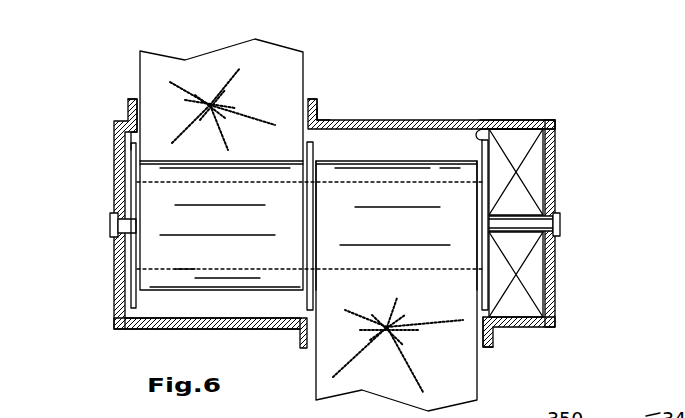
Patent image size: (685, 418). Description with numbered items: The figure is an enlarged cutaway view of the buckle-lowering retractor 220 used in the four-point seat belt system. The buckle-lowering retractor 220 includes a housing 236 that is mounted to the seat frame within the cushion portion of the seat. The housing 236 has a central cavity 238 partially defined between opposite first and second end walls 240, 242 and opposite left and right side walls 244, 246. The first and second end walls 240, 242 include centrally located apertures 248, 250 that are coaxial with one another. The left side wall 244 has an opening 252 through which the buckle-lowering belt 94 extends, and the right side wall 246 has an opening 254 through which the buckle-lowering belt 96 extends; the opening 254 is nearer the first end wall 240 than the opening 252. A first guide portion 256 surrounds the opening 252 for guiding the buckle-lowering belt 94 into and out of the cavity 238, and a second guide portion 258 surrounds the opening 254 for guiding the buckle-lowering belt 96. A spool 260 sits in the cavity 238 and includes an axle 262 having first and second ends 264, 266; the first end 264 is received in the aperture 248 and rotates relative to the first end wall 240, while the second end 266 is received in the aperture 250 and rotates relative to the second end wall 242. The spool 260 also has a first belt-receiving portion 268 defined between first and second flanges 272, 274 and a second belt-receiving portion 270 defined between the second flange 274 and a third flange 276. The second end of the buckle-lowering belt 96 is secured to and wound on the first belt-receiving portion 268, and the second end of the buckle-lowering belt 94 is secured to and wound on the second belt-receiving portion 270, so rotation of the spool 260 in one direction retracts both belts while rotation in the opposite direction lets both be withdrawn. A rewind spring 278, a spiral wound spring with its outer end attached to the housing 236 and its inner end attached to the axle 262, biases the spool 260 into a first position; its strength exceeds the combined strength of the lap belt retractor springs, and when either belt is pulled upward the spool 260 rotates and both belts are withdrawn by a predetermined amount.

The buckle-lowering belt 94 is at (450, 380).
The buckle-lowering belt 96 is at (175, 76).
The buckle-lowering retractor 220 is at (497, 107).
The housing 236 is at (143, 327).
The central cavity 238 is at (407, 153).
The first end wall 240 is at (118, 156).
The second end wall 242 is at (556, 180).
The left side wall 244 is at (253, 330).
The right side wall 246 is at (415, 121).
The aperture 248 is at (112, 218).
The aperture 250 is at (558, 232).
The opening 252 is at (482, 350).
The opening 254 is at (310, 92).
The first guide portion 256 is at (493, 342).
The second guide portion 258 is at (319, 98).
The spool 260 is at (131, 287).
The axle 262 is at (515, 215).
The first end 264 is at (117, 232).
The second end 266 is at (558, 222).
The first belt-receiving portion 268 is at (185, 269).
The second belt-receiving portion 270 is at (455, 183).
The first flange 272 is at (131, 146).
The second flange 274 is at (313, 148).
The third flange 276 is at (512, 122).
The rewind spring 278 is at (528, 282).